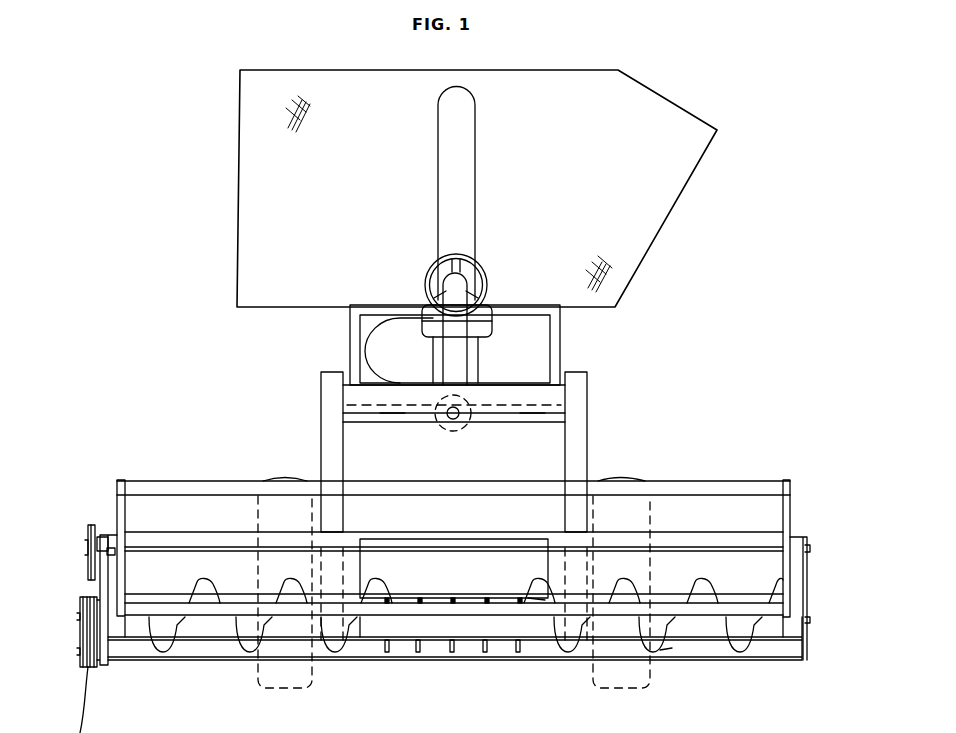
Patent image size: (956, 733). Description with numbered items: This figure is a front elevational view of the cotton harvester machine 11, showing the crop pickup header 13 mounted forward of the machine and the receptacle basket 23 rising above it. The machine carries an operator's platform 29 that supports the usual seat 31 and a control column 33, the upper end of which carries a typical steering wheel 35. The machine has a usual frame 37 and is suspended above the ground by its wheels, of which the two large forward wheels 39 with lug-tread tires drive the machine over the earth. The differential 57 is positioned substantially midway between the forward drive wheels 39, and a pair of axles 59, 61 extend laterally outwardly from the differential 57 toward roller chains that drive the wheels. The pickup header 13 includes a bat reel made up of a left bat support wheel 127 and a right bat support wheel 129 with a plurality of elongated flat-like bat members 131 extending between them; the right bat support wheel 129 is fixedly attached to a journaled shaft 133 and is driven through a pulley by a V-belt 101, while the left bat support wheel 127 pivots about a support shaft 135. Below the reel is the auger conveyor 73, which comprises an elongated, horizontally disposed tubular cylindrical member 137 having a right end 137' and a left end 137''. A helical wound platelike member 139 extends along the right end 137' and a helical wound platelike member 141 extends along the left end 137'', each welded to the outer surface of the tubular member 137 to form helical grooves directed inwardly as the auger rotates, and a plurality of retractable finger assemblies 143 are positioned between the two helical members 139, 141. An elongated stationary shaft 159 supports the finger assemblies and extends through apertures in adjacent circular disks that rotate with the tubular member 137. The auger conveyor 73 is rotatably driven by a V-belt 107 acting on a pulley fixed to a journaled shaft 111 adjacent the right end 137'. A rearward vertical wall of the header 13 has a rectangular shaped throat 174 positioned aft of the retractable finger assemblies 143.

The cotton harvester machine 11 is at (790, 62).
The crop pickup header 13 is at (782, 400).
The receptacle basket 23 is at (598, 143).
The operator's platform 29 is at (548, 395).
The seat 31 is at (488, 303).
The control column 33 is at (458, 357).
The steering wheel 35 is at (480, 263).
The frame 37 is at (330, 418).
The forward wheels 39 is at (270, 513).
The differential 57 is at (455, 425).
The axle 59 is at (393, 414).
The axle 61 is at (533, 420).
The auger conveyor 73 is at (705, 630).
The V-belt 101 is at (92, 527).
The V-belt 107 is at (83, 672).
The journaled shaft 111 is at (93, 622).
The left bat support wheel 127 is at (788, 508).
The right bat support wheel 129 is at (120, 500).
The bat members 131 is at (198, 487).
The journaled shaft 133 is at (115, 552).
The support shaft 135 is at (808, 566).
The tubular cylindrical member 137 is at (349, 666).
The right end 137' is at (123, 668).
The left end 137'' is at (799, 669).
The helical wound platelike member 139 is at (168, 648).
The helical wound platelike member 141 is at (545, 598).
The retractable finger assemblies 143 is at (420, 602).
The stationary shaft 159 is at (810, 620).
The throat 174 is at (392, 566).